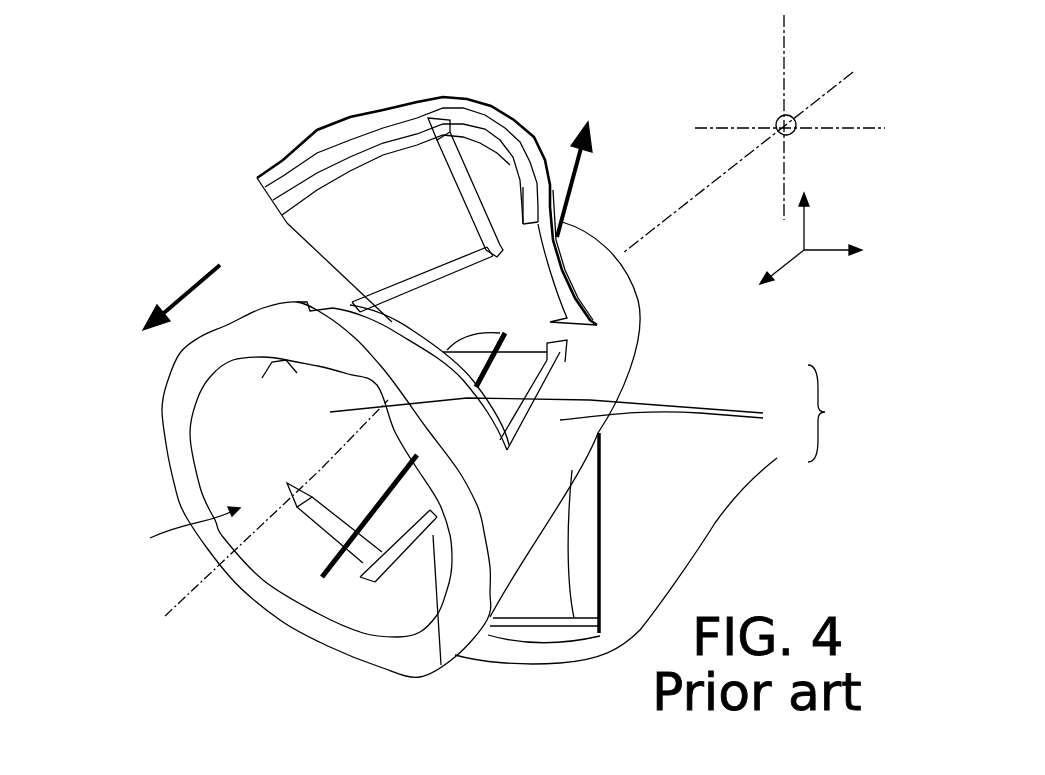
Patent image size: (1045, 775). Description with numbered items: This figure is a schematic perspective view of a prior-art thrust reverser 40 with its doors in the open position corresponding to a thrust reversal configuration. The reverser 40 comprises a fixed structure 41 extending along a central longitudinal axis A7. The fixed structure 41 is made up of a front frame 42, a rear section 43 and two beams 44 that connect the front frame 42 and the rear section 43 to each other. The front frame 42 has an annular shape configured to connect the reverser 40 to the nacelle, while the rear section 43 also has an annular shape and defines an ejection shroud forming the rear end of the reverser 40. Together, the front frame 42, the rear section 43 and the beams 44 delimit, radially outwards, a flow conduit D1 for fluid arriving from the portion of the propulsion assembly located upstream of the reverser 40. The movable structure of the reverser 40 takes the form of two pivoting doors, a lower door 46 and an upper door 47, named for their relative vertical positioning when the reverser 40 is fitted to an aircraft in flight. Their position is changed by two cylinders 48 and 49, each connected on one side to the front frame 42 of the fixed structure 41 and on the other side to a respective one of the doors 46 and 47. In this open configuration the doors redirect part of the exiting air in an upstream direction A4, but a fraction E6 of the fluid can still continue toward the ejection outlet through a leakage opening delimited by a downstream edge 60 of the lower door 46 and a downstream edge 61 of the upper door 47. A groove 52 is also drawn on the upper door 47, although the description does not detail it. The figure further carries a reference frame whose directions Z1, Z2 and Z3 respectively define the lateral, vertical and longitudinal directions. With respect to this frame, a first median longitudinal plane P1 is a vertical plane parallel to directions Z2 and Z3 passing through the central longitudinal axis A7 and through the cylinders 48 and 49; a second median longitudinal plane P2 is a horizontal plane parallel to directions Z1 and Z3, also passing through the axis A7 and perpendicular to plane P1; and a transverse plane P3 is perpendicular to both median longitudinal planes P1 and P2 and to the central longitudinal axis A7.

The reverser 40 is at (150, 196).
The fixed structure 41 is at (596, 443).
The front frame 42 is at (633, 549).
The rear section 43 is at (623, 293).
The beams 44 is at (570, 412).
The lower door 46 is at (600, 555).
The upper door 47 is at (500, 108).
The cylinder 48 is at (395, 290).
The cylinder 49 is at (441, 665).
The groove 52 is at (392, 138).
The downstream edge of the lower door 60 is at (547, 360).
The downstream edge of the upper door 61 is at (512, 332).
The upstream direction A4 is at (187, 285).
The central longitudinal axis A7 is at (193, 597).
The flow conduit D1 is at (175, 536).
The fraction of the fluid E6 is at (580, 173).
The first median longitudinal plane P1 is at (778, 118).
The second median longitudinal plane P2 is at (800, 133).
The transverse plane P3 is at (797, 112).
The lateral direction Z1 is at (855, 248).
The vertical direction Z2 is at (827, 214).
The longitudinal direction Z3 is at (784, 281).